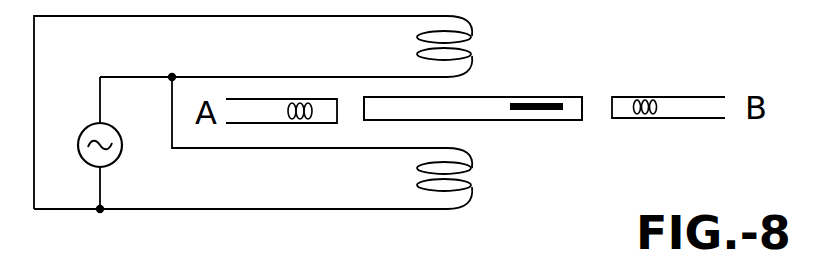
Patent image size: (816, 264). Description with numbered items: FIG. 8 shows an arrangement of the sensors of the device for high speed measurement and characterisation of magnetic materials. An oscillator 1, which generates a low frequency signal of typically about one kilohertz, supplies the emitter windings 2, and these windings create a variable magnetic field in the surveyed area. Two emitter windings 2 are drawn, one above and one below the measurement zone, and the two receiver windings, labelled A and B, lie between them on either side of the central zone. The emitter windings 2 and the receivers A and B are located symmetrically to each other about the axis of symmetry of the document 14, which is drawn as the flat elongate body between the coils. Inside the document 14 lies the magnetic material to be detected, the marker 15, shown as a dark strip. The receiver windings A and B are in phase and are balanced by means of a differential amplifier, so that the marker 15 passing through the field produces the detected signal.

The oscillator 1 is at (118, 160).
The emitter windings 2 is at (473, 44).
The document 14 is at (528, 120).
The marker 15 is at (553, 105).